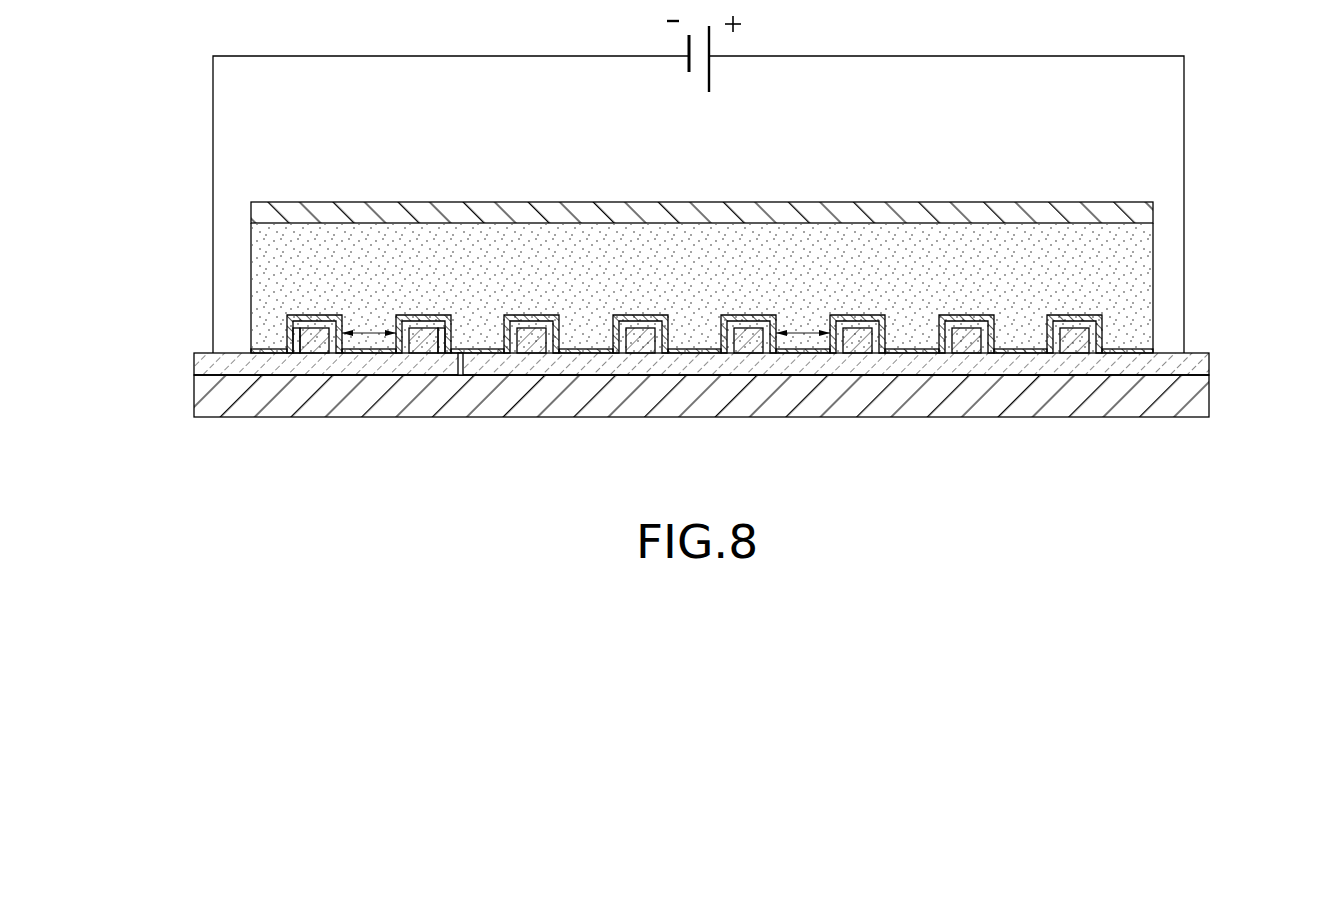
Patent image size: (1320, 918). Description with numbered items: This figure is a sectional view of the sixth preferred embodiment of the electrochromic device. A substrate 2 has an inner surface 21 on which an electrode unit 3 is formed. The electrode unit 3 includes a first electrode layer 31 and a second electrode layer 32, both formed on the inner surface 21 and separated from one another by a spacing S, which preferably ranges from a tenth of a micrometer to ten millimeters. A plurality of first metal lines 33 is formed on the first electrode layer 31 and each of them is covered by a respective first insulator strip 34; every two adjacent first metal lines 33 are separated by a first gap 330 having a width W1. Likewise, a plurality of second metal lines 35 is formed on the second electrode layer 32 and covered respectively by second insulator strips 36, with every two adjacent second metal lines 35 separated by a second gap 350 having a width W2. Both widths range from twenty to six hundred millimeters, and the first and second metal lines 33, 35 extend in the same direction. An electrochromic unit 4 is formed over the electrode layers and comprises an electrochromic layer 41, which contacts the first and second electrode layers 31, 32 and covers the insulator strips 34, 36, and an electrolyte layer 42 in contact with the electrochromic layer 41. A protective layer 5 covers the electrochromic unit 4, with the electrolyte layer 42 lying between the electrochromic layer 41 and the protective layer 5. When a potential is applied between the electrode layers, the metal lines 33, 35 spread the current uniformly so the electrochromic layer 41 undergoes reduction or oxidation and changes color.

The substrate 2 is at (1100, 397).
The inner surface 21 is at (983, 377).
The electrode unit 3 is at (1216, 345).
The first electrode layer 31 is at (1203, 365).
The second electrode layer 32 is at (202, 367).
The first metal lines 33 is at (638, 342).
The first insulator strips 34 is at (947, 342).
The second metal lines 35 is at (317, 338).
The second insulator strips 36 is at (425, 338).
The electrochromic unit 4 is at (1166, 245).
The electrochromic layer 41 is at (292, 332).
The electrolyte layer 42 is at (290, 256).
The protective layer 5 is at (1071, 213).
The first gap 330 is at (802, 322).
The second gap 350 is at (368, 322).
The width of first gap W1 is at (803, 338).
The width of second gap W2 is at (368, 338).
The spacing S is at (461, 362).